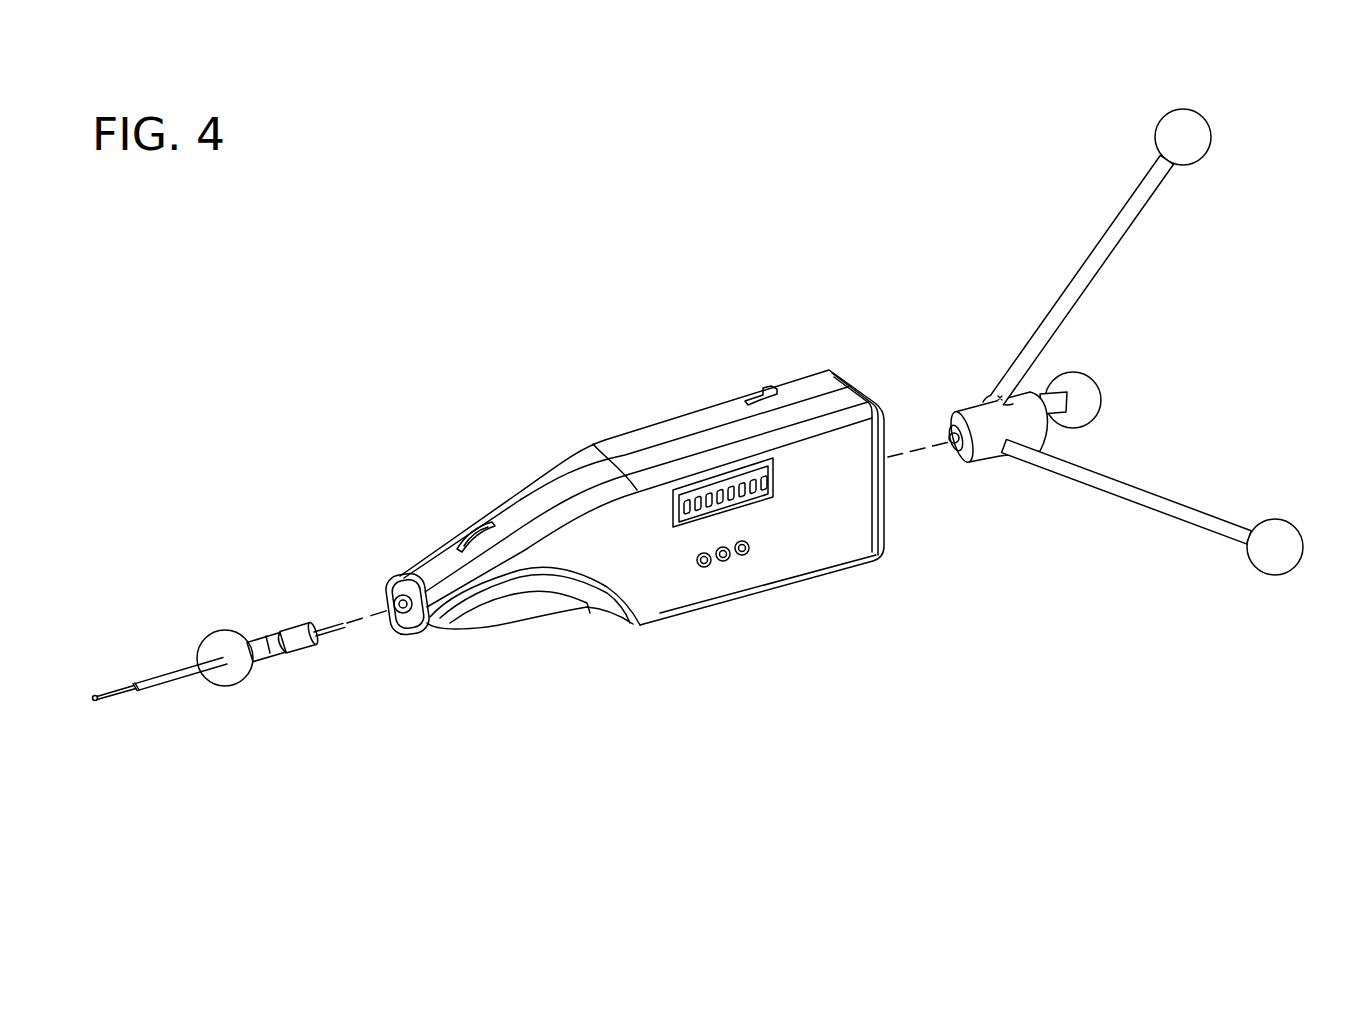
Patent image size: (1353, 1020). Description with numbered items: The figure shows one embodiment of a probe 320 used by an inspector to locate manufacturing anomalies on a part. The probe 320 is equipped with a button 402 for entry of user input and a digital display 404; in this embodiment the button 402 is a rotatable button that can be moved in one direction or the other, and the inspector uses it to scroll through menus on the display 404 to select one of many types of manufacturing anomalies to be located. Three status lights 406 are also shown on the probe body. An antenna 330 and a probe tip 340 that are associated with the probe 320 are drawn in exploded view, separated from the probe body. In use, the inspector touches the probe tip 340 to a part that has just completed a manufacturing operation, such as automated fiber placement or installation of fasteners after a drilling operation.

The probe 320 is at (1193, 286).
The antenna 330 is at (1096, 240).
The tip 340 is at (113, 701).
The button 402 is at (481, 521).
The digital display 404 is at (777, 493).
The status lights 406 is at (743, 556).